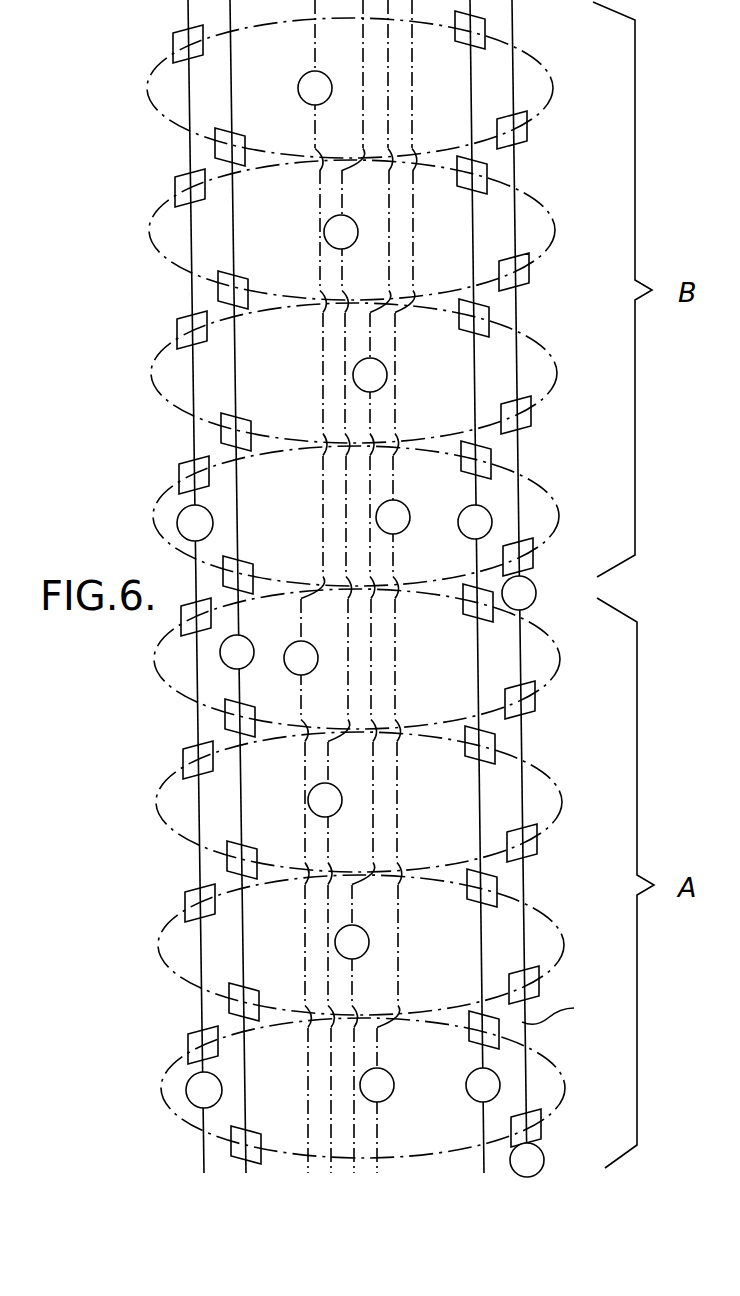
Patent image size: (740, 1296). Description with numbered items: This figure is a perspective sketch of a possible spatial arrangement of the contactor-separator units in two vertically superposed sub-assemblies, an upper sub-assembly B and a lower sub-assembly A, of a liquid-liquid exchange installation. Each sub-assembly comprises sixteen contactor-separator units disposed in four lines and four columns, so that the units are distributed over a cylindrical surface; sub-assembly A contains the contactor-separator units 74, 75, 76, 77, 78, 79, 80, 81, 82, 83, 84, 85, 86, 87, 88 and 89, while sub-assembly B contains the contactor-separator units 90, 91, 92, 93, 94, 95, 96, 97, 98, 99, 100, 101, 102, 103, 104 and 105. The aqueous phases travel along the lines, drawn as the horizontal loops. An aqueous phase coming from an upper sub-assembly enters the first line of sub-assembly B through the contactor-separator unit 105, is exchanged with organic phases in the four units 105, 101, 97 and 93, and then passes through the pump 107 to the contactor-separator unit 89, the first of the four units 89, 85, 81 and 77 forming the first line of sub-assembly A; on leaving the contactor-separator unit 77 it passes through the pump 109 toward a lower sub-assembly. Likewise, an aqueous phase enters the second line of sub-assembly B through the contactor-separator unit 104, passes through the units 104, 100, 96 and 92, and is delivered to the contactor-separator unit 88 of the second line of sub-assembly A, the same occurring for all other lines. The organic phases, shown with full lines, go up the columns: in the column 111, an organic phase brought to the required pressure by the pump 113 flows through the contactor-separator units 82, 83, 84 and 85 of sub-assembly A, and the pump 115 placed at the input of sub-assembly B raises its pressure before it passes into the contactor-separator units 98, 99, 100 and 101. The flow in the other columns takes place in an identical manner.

The contactor-separator unit 74 is at (203, 1045).
The contactor-separator unit 75 is at (200, 903).
The contactor-separator unit 76 is at (198, 760).
The contactor-separator unit 77 is at (196, 617).
The contactor-separator unit 78 is at (246, 1145).
The contactor-separator unit 79 is at (244, 1002).
The contactor-separator unit 80 is at (242, 860).
The contactor-separator unit 81 is at (240, 718).
The contactor-separator unit 82 is at (526, 1128).
The contactor-separator unit 83 is at (524, 985).
The contactor-separator unit 84 is at (522, 843).
The contactor-separator unit 85 is at (520, 700).
The contactor-separator unit 86 is at (484, 1030).
The contactor-separator unit 87 is at (482, 888).
The contactor-separator unit 88 is at (480, 745).
The contactor-separator unit 89 is at (478, 603).
The contactor-separator unit 90 is at (194, 475).
The contactor-separator unit 91 is at (192, 330).
The contactor-separator unit 92 is at (190, 188).
The contactor-separator unit 93 is at (188, 44).
The contactor-separator unit 94 is at (238, 575).
The contactor-separator unit 95 is at (236, 432).
The contactor-separator unit 96 is at (233, 290).
The contactor-separator unit 97 is at (230, 147).
The contactor-separator unit 98 is at (518, 557).
The contactor-separator unit 99 is at (516, 415).
The contactor-separator unit 100 is at (514, 272).
The contactor-separator unit 101 is at (512, 130).
The contactor-separator unit 102 is at (476, 460).
The contactor-separator unit 103 is at (474, 318).
The contactor-separator unit 104 is at (472, 175).
The contactor-separator unit 105 is at (470, 30).
The pump 107 is at (315, 88).
The pump 109 is at (301, 658).
The column 111 is at (562, 1010).
The pump 113 is at (527, 1160).
The pump 115 is at (519, 593).